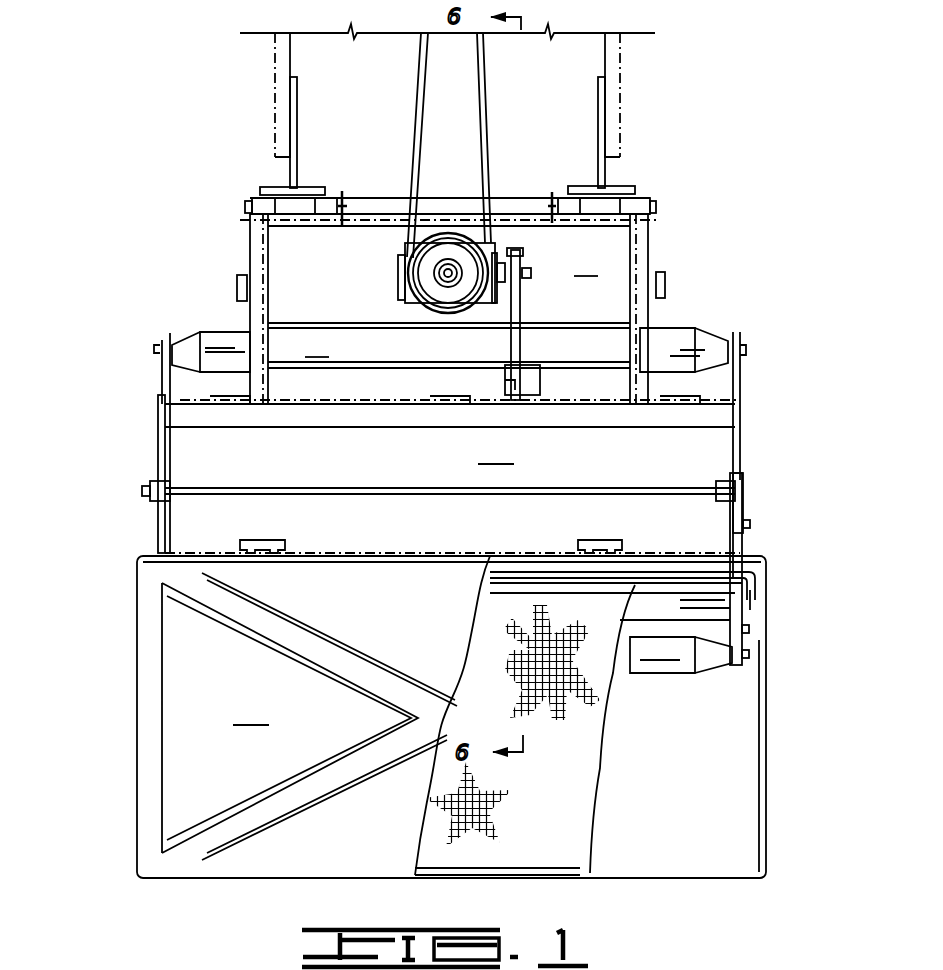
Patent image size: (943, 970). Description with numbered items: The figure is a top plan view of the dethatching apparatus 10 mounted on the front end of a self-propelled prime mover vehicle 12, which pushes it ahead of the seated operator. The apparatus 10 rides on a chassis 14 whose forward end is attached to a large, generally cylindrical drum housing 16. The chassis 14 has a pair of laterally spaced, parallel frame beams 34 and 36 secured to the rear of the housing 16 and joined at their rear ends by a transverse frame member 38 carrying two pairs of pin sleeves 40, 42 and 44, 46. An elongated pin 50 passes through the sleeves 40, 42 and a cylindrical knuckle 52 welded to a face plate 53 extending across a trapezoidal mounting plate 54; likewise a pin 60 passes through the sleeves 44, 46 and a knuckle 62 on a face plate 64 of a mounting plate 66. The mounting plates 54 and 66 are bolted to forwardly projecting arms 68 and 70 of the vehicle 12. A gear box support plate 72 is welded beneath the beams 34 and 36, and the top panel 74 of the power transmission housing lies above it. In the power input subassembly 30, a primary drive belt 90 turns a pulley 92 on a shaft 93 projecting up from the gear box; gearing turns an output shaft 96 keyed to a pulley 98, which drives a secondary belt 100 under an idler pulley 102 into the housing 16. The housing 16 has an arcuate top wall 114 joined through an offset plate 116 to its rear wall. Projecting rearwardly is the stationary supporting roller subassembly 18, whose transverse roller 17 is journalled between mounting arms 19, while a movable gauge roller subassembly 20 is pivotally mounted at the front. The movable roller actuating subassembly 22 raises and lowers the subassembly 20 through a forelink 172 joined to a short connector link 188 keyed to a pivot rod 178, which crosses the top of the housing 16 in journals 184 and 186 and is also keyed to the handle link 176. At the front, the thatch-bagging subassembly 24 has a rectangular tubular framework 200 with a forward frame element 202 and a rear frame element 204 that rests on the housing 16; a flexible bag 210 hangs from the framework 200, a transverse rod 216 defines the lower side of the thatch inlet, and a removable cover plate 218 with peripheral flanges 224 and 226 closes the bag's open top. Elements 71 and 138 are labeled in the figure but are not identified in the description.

The dethatching apparatus 10 is at (107, 470).
The prime mover vehicle 12 is at (632, 85).
The chassis 14 is at (215, 287).
The drum housing 16 is at (212, 522).
The roller 17 is at (319, 345).
The stationary supporting roller subassembly 18 is at (720, 328).
The mounting arms 19 is at (162, 355).
The movable gauge roller subassembly 20 is at (715, 695).
The movable roller actuating subassembly 22 is at (655, 655).
The thatch-bagging subassembly 24 is at (140, 740).
The power input subassembly 30 is at (400, 254).
The frame beam 34 is at (252, 235).
The frame beam 36 is at (648, 235).
The transverse frame member 38 is at (510, 210).
The pin sleeve 40 is at (250, 198).
The pin sleeve 42 is at (335, 198).
The pin sleeve 44 is at (560, 205).
The pin sleeve 46 is at (638, 205).
The elongated pin 50 is at (245, 205).
The cylindrical knuckle 52 is at (326, 205).
The face plate 53 is at (272, 187).
The mounting plate 54 is at (298, 103).
The elongated pin 60 is at (654, 203).
The knuckle 62 is at (650, 255).
The face plate 64 is at (625, 193).
The mounting plate 66 is at (598, 94).
The forwardly projecting arm 68 is at (282, 44).
The forwardly projecting arm 70 is at (612, 63).
The housing 71 is at (588, 264).
The gear box support plate 72 is at (404, 302).
The top panel 74 is at (260, 266).
The primary drive belt 90 is at (482, 104).
The pulley 92 is at (420, 273).
The shaft 93 is at (452, 267).
The output shaft 96 is at (530, 272).
The pulley 98 is at (528, 255).
The secondary belt 100 is at (522, 310).
The idler pulley 102 is at (505, 378).
The arcuate top wall 114 is at (450, 446).
The offset plate 116 is at (298, 480).
The mounting pad 138 is at (225, 402).
The forelink 172 is at (770, 555).
The handle link 176 is at (162, 440).
The pivot rod 178 is at (352, 487).
The journal 184 is at (160, 490).
The journal 186 is at (718, 490).
The connector link 188 is at (745, 502).
The framework 200 is at (760, 765).
The forward frame element 202 is at (720, 878).
The rear frame element 204 is at (690, 570).
The flexible bag 210 is at (570, 840).
The transverse rod 216 is at (760, 598).
The cover plate 218 is at (309, 716).
The peripheral flange 224 is at (385, 553).
The peripheral flange 226 is at (252, 878).